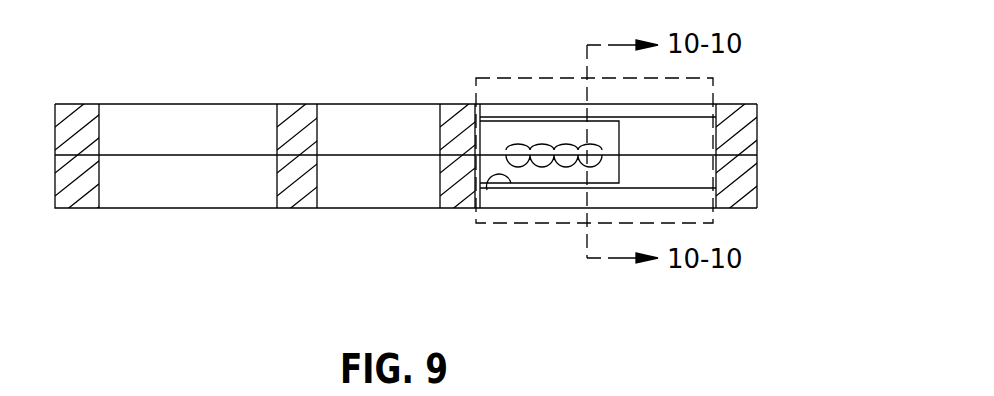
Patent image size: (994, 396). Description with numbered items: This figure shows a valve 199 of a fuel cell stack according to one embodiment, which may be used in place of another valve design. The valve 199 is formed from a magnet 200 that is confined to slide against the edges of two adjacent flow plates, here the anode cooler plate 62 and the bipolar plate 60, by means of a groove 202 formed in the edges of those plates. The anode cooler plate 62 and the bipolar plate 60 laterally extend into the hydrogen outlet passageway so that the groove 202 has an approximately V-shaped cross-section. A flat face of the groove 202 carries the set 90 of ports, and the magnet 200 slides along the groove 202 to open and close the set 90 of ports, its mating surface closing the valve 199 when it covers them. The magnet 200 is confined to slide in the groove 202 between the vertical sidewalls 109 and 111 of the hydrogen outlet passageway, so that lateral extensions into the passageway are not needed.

The bipolar plate 60 is at (218, 195).
The anode cooler plate 62 is at (245, 112).
The set of ports 90 is at (557, 142).
The vertical sidewall 109 is at (740, 143).
The vertical sidewall 111 is at (450, 203).
The valve 199 is at (713, 215).
The magnet 200 is at (685, 143).
The groove 202 is at (487, 190).